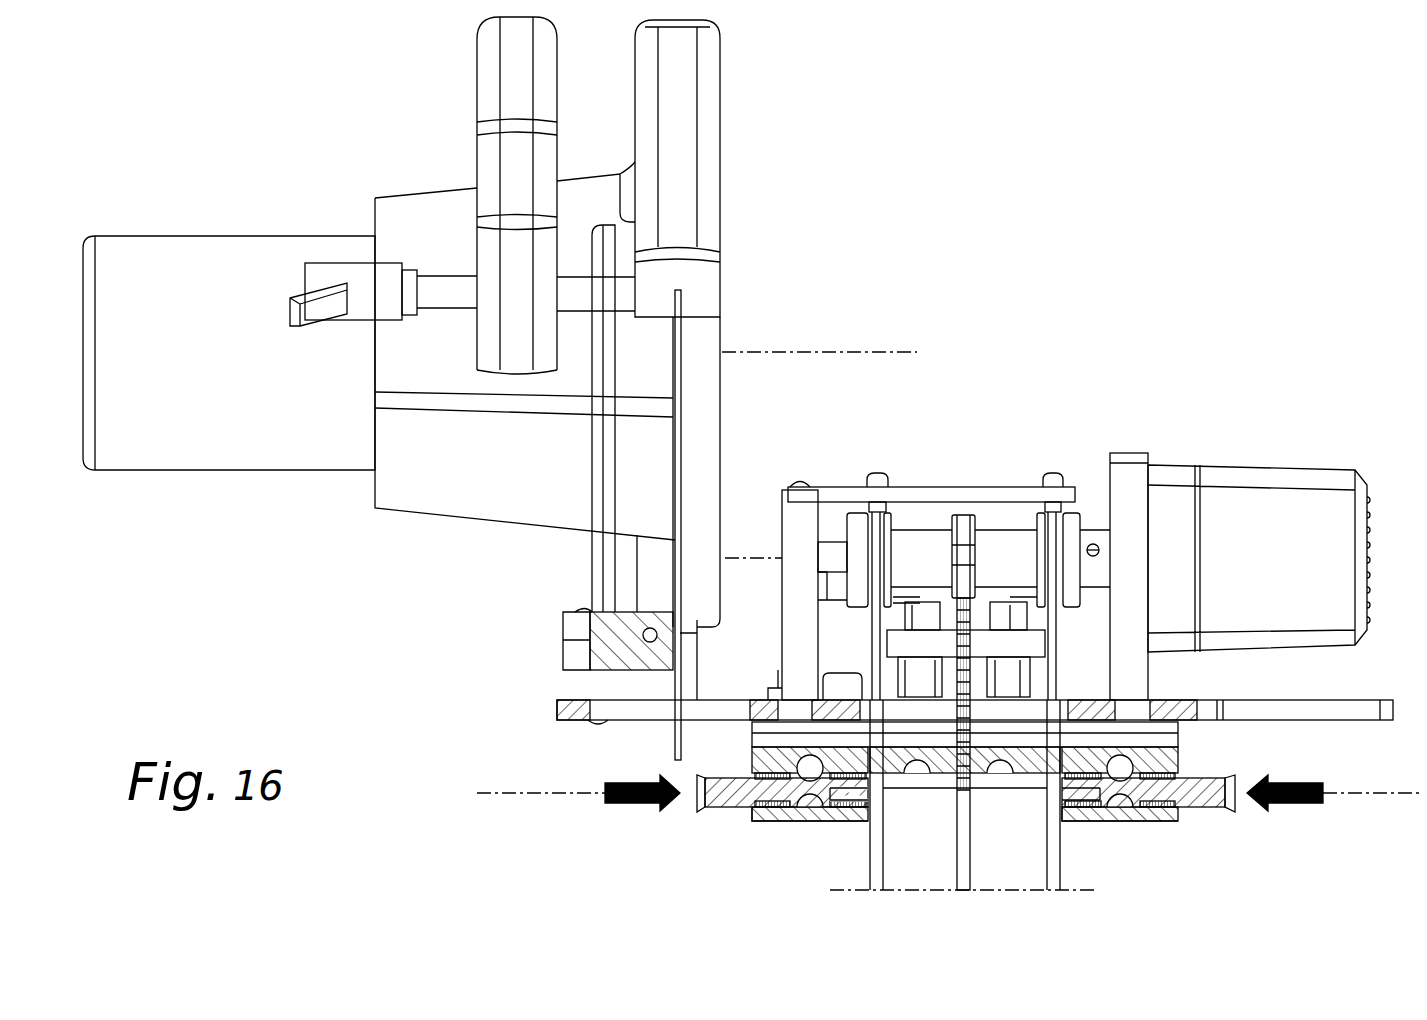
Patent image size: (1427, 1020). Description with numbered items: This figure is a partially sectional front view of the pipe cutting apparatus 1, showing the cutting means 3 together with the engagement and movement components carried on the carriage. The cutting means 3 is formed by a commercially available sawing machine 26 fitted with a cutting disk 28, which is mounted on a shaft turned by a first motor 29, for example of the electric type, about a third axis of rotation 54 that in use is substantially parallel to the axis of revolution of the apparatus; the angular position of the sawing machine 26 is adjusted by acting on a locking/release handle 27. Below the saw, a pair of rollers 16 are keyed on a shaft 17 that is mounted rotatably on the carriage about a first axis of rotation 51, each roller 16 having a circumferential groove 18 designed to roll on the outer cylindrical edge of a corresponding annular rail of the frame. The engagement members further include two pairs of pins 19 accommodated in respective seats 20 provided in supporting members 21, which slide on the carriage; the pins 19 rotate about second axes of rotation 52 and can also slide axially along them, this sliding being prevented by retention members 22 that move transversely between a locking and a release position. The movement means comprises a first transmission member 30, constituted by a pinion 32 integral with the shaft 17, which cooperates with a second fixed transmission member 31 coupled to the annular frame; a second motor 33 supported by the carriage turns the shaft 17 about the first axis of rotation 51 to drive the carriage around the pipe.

The pipe cutting apparatus 1 is at (1325, 710).
The cutting means 3 is at (818, 315).
The rollers 16 is at (855, 540).
The shaft 17 is at (1003, 562).
The circumferential groove 18 is at (878, 548).
The pins 19 is at (735, 795).
The seats 20 is at (787, 822).
The supporting members 21 is at (760, 757).
The retention members 22 is at (800, 804).
The sawing machine 26 is at (586, 205).
The locking/release handle 27 is at (338, 270).
The cutting disk 28 is at (681, 373).
The first motor 29 is at (176, 285).
The first transmission member 30 is at (952, 567).
The second fixed transmission member 31 is at (970, 627).
The pinion 32 is at (962, 538).
The second motor 33 is at (1278, 533).
The first axis of rotation 51 is at (742, 555).
The second axes of rotation 52 is at (515, 797).
The third axis of rotation 54 is at (890, 350).